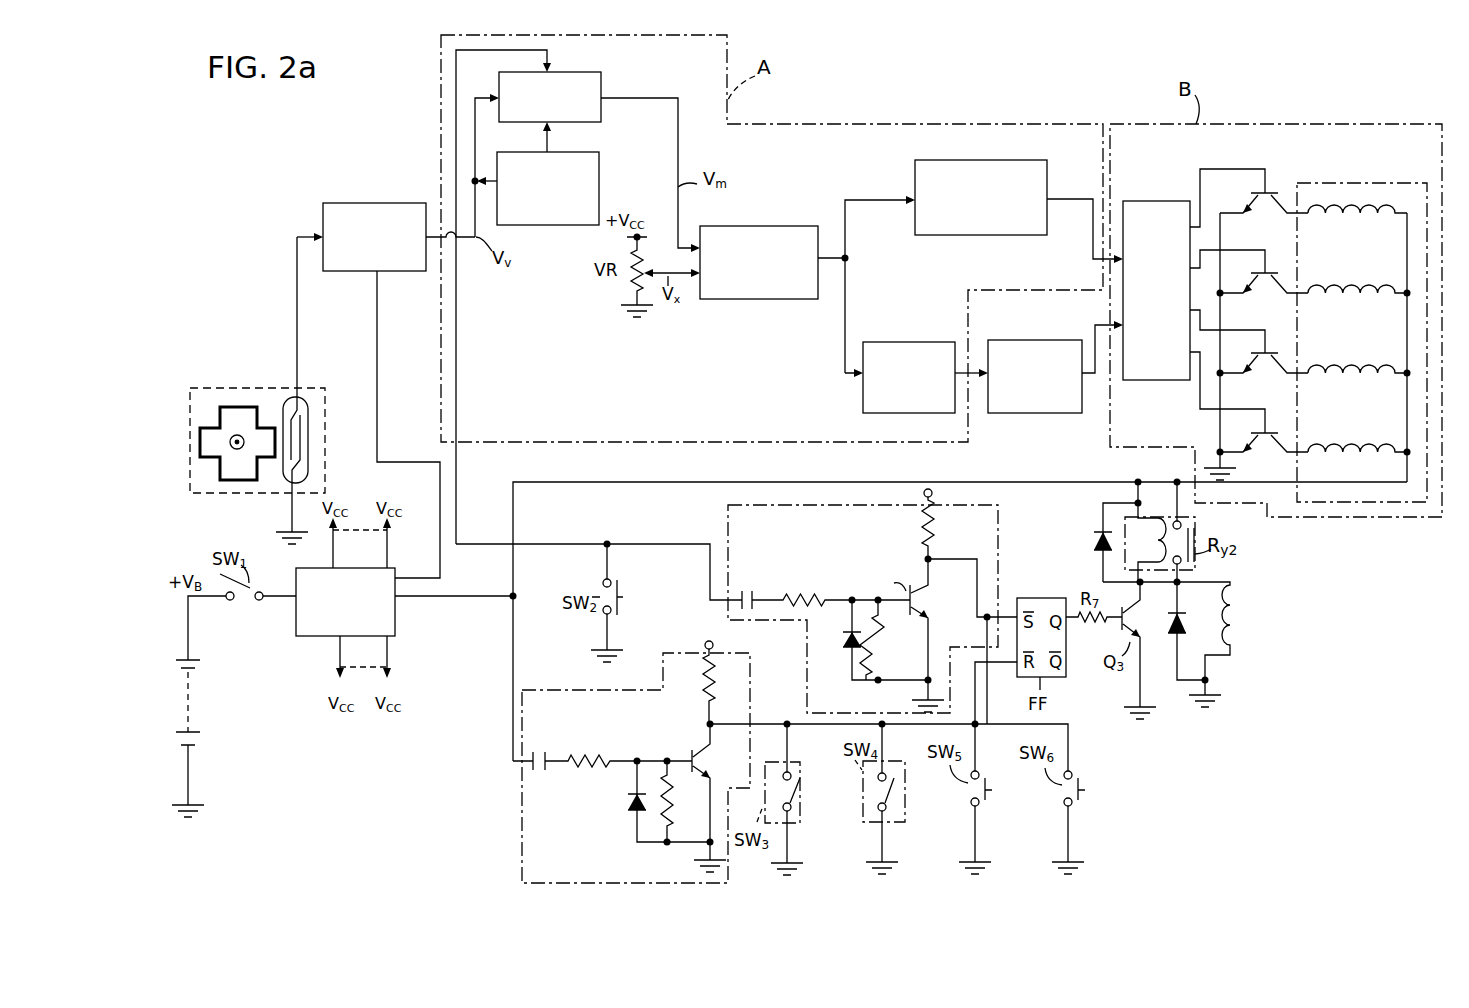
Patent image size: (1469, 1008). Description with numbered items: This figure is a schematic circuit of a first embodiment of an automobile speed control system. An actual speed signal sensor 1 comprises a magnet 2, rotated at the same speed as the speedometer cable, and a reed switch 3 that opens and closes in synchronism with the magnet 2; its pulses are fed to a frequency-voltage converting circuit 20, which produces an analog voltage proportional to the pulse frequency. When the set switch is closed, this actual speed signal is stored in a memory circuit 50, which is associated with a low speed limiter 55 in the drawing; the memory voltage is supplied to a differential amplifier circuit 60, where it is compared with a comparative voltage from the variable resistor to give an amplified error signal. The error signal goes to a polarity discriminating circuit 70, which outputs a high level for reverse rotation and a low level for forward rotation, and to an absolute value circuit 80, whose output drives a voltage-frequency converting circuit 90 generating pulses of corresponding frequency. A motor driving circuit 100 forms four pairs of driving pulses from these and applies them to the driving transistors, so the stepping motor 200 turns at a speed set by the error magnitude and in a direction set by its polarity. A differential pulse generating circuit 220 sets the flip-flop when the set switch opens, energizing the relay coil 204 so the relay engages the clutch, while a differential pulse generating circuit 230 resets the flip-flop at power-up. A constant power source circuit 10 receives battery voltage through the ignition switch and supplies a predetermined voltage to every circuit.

The actual speed signal sensor 1 is at (218, 388).
The magnet 2 is at (190, 448).
The reed switch 3 is at (286, 470).
The constant power source circuit 10 is at (400, 636).
The frequency-voltage converting circuit 20 is at (374, 203).
The memory circuit 50 is at (603, 84).
The low speed limiter circuit 55 is at (601, 194).
The differential amplifier circuit 60 is at (759, 226).
The polarity discriminating circuit 70 is at (974, 160).
The absolute value circuit 80 is at (922, 342).
The voltage-frequency converting circuit 90 is at (1048, 340).
The motor driving circuit 100 is at (1166, 201).
The stepping motor 200 is at (1328, 183).
The relay coil 204 is at (1238, 616).
The differential pulse generating circuit 220 is at (727, 530).
The differential pulse generating circuit 230 is at (560, 690).